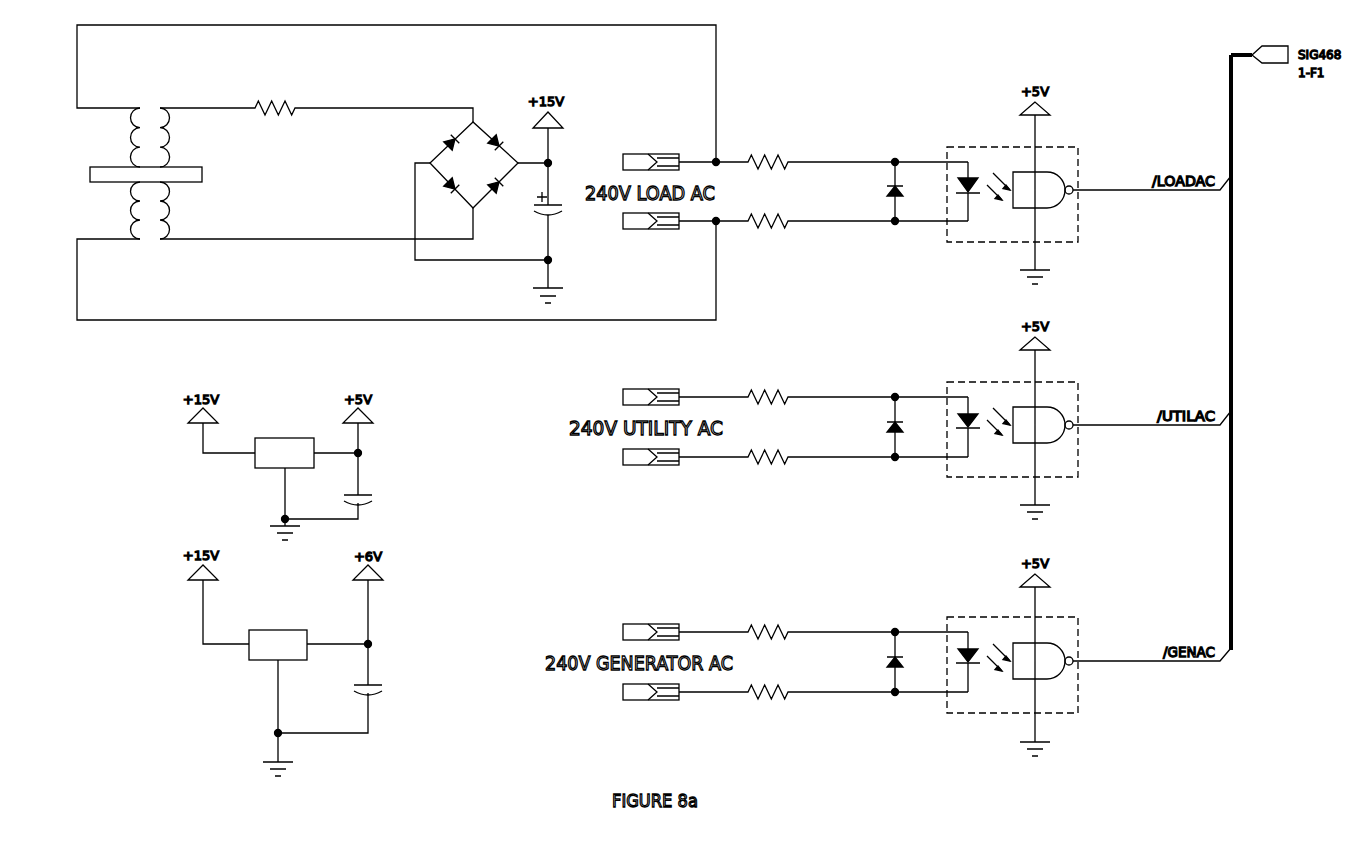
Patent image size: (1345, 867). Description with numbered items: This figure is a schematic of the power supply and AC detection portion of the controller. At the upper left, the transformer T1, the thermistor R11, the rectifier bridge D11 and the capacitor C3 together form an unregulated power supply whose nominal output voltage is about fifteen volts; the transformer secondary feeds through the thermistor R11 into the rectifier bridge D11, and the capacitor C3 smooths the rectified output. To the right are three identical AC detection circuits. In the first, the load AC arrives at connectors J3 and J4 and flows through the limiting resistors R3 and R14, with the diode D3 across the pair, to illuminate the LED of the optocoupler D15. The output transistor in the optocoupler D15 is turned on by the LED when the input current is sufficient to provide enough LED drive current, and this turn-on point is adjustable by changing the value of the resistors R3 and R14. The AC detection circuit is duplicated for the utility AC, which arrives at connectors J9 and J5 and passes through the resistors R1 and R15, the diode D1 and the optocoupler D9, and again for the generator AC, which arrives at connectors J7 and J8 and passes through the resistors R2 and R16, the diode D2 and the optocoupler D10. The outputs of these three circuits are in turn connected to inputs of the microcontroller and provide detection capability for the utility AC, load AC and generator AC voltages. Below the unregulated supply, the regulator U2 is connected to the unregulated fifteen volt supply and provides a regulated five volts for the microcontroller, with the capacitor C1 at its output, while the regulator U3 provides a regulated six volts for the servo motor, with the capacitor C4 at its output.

The transformer T1 is at (146, 164).
The thermistor R11 is at (275, 98).
The rectifier bridge D11 is at (474, 146).
The capacitor C3 is at (538, 204).
The load AC connector J3 is at (651, 147).
The load AC connector J4 is at (651, 236).
The limiting resistor R3 is at (768, 152).
The limiting resistor R14 is at (768, 211).
The diode D3 is at (903, 191).
The optocoupler D15 is at (1011, 183).
The utility AC connector J9 is at (651, 384).
The utility AC connector J5 is at (651, 472).
The resistor R1 is at (768, 387).
The resistor R15 is at (768, 447).
The diode D1 is at (903, 427).
The optocoupler D9 is at (1012, 418).
The generator AC connector J7 is at (651, 619).
The generator AC connector J8 is at (651, 707).
The resistor R2 is at (768, 622).
The resistor R16 is at (768, 682).
The diode D2 is at (903, 662).
The optocoupler D10 is at (1011, 653).
The regulator U2 is at (284, 436).
The capacitor C1 is at (349, 497).
The regulator U3 is at (278, 632).
The capacitor C4 is at (356, 689).